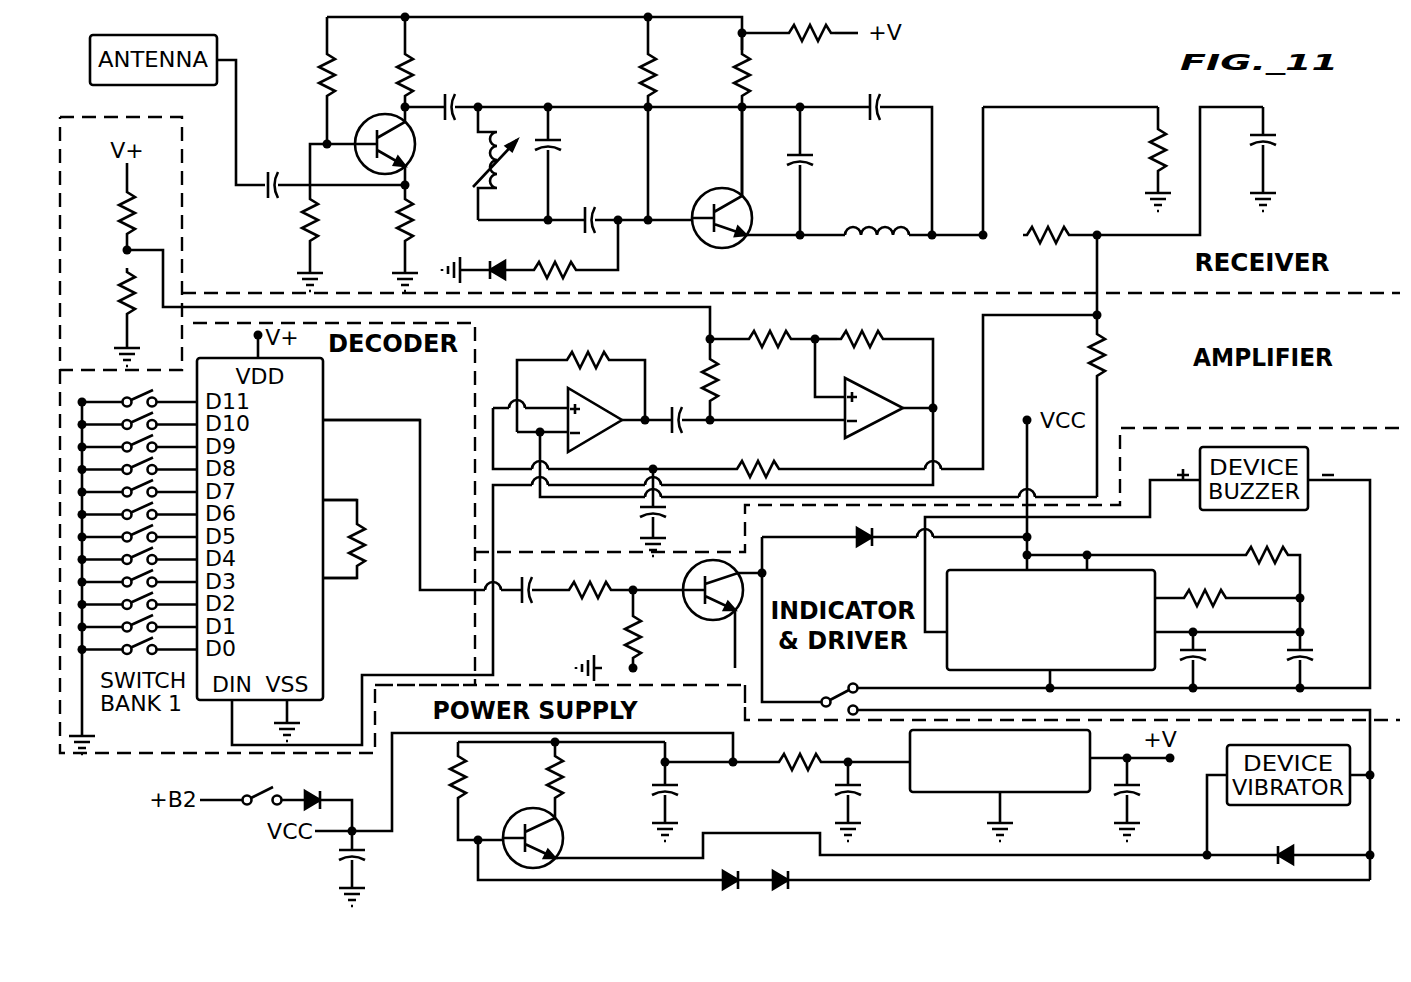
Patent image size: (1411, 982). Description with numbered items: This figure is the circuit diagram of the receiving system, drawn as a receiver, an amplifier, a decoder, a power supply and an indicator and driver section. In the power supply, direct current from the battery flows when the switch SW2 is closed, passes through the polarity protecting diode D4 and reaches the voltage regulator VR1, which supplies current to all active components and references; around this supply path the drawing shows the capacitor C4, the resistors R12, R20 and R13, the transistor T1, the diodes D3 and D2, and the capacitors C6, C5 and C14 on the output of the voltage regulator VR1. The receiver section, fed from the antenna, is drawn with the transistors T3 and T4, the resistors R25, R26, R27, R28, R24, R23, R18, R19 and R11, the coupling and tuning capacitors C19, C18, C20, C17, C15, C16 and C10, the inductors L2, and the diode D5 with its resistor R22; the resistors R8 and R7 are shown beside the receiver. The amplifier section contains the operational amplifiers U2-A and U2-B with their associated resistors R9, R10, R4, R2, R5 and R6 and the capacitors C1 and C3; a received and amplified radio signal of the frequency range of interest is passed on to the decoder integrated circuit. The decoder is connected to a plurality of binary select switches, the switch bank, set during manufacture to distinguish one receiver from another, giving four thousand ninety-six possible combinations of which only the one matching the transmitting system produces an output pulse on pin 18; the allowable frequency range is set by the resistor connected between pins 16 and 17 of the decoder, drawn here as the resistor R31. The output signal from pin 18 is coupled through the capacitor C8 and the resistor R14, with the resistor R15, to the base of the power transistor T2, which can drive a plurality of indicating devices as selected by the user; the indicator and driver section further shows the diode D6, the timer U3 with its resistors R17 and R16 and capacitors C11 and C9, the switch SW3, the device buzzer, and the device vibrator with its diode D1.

The resistor R25 is at (300, 80).
The resistor R26 is at (380, 62).
The resistor R27 is at (289, 238).
The resistor R28 is at (384, 238).
The resistor R24 is at (623, 118).
The resistor R23 is at (718, 66).
The resistor R18 is at (788, 47).
The resistor R19 is at (1137, 159).
The resistor R11 is at (1047, 221).
The resistor R22 is at (555, 256).
The resistor R8 is at (108, 213).
The resistor R7 is at (108, 293).
The resistor R9 is at (731, 379).
The resistor R10 is at (771, 324).
The resistor R4 is at (851, 324).
The resistor R2 is at (588, 345).
The resistor R5 is at (758, 454).
The resistor R6 is at (1076, 413).
The resistor R31 is at (383, 545).
The resistor R14 is at (590, 576).
The resistor R15 is at (607, 629).
The resistor R17 is at (1267, 540).
The resistor R16 is at (1202, 585).
The resistor R12 is at (432, 777).
The resistor R20 is at (529, 777).
The resistor R13 is at (796, 749).
The capacitor C19 is at (449, 91).
The capacitor C18 is at (269, 169).
The capacitor C20 is at (576, 163).
The capacitor C17 is at (591, 205).
The capacitor C15 is at (874, 89).
The capacitor C16 is at (824, 171).
The capacitor C10 is at (1291, 159).
The capacitor C1 is at (679, 405).
The capacitor C3 is at (677, 529).
The capacitor C8 is at (526, 577).
The capacitor C11 is at (1217, 659).
The capacitor C9 is at (1320, 659).
The capacitor C4 is at (332, 876).
The capacitor C6 is at (683, 811).
The capacitor C5 is at (867, 810).
The capacitor C14 is at (1153, 811).
The transistor T1 is at (551, 838).
The power transistor T2 is at (722, 614).
The transistor T3 is at (369, 146).
The transistor T4 is at (722, 177).
The diode D1 is at (1283, 838).
The diode D2 is at (785, 865).
The diode D3 is at (735, 865).
The polarity protecting diode D4 is at (315, 785).
The diode D5 is at (500, 256).
The diode D6 is at (867, 552).
The inductor L2 is at (677, 171).
The operational amplifier U2-A is at (605, 429).
The operational amplifier U2-B is at (884, 416).
The timer IC U3 is at (1051, 620).
The voltage regulator VR1 is at (1000, 762).
The switch SW2 is at (250, 781).
The selector switch SW3 is at (823, 692).
The pin 18 is at (352, 419).
The pin 17 is at (321, 499).
The pin 16 is at (321, 577).